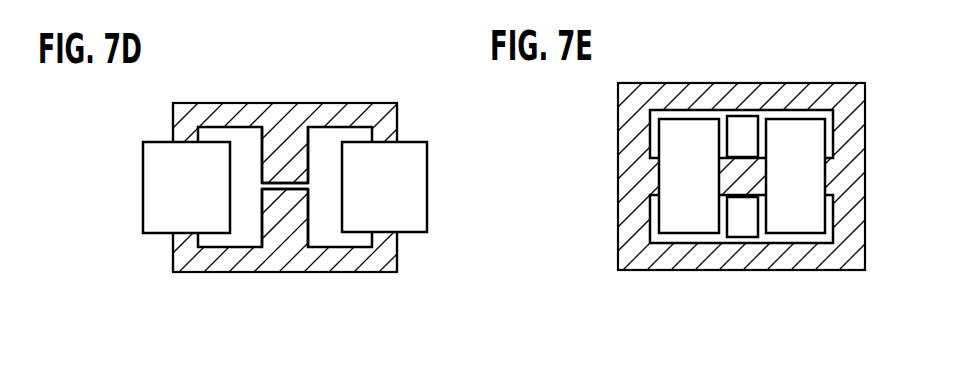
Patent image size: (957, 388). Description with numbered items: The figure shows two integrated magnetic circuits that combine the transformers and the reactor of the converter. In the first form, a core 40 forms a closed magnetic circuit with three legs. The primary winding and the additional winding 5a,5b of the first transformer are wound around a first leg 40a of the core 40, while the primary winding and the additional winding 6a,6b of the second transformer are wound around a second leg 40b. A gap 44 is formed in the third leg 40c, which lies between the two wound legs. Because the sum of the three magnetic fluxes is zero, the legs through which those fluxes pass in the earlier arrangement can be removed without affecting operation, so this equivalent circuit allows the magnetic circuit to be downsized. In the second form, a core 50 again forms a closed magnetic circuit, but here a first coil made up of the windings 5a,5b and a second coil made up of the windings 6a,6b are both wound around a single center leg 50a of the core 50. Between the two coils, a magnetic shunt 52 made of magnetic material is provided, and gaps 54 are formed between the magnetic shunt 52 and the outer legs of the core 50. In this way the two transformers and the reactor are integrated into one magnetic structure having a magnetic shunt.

In FIG. 7D, the core 40 is at (285, 103).
In FIG. 7D, the gap 44 is at (310, 180).
In FIG. 7D, the first leg 40a is at (173, 238).
In FIG. 7D, the second leg 40b is at (397, 238).
In FIG. 7D, the third leg 40c is at (312, 228).
In FIG. 7D, the primary winding and additional winding of transformer T1 5a,5b is at (142, 190).
In FIG. 7E, the primary winding and additional winding of transformer T1 5a,5b is at (677, 237).
In FIG. 7D, the primary winding and additional winding of transformer T2 6a,6b is at (428, 185).
In FIG. 7E, the primary winding and additional winding of transformer T2 6a,6b is at (806, 236).
In FIG. 7E, the core 50 is at (657, 83).
In FIG. 7E, the center leg 50a is at (723, 238).
In FIG. 7E, the magnetic shunt 52 is at (748, 124).
In FIG. 7E, the gaps 54 is at (723, 113).